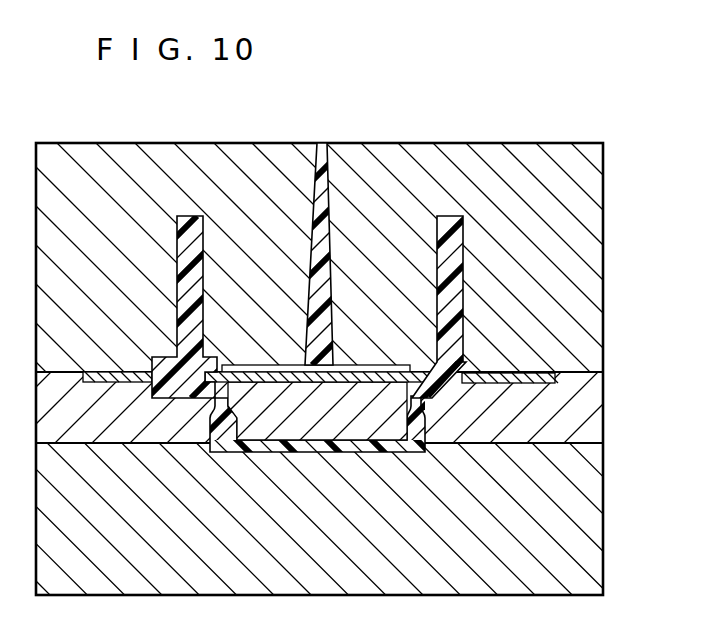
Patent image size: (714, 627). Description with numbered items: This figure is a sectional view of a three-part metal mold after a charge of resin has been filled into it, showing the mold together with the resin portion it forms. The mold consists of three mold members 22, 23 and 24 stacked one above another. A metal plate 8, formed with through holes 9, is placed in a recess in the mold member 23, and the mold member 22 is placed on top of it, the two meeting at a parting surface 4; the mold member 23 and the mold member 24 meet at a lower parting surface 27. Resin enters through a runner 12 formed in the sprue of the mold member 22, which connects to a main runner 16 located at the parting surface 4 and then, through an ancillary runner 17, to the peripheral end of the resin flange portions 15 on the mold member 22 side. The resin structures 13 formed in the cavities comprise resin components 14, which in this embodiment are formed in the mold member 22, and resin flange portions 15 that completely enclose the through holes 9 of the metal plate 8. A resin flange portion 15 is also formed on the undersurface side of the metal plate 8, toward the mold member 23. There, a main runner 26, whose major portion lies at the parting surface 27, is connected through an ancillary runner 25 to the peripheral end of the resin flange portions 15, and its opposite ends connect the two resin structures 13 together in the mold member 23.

The parting surface 4 is at (601, 372).
The metal plate 8 is at (535, 373).
The through holes 9 is at (445, 375).
The runner 12 is at (313, 226).
The resin structures 13 is at (195, 240).
The resin components 14 is at (452, 243).
The resin flange portions 15 is at (483, 373).
The main runner 16 is at (354, 366).
The ancillary runner 17 is at (404, 366).
The mold member 22 is at (584, 243).
The mold member 23 is at (583, 415).
The mold member 24 is at (590, 508).
The ancillary runner 25 is at (420, 402).
The main runner 26 is at (298, 452).
The parting surface 27 is at (497, 447).